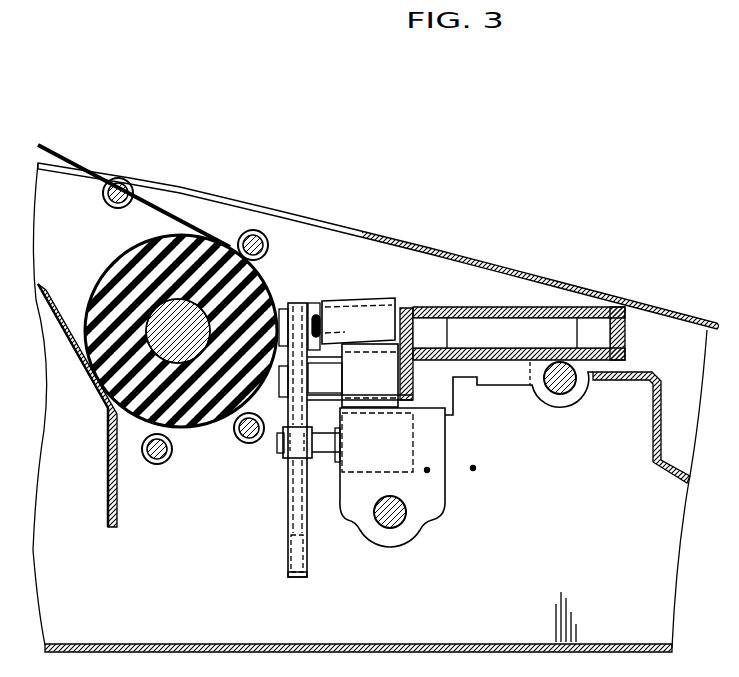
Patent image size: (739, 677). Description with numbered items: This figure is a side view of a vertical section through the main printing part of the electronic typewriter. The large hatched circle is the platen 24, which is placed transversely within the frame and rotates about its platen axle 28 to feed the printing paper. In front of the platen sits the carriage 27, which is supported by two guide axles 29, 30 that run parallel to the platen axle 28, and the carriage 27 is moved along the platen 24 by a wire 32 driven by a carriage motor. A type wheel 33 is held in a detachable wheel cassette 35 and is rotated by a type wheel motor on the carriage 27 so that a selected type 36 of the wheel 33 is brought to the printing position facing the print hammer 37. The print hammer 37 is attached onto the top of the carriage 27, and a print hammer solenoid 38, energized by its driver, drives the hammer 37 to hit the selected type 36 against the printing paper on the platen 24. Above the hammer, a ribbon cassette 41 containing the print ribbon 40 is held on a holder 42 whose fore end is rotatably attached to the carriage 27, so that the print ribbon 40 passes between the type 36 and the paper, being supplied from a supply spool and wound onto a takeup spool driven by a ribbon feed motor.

The platen 24 is at (186, 249).
The platen axle 28 is at (173, 318).
The print ribbon 40 is at (297, 299).
The type wheel 33 is at (290, 517).
The selected type 36 is at (287, 566).
The wheel cassette 35 is at (303, 578).
The print hammer 37 is at (314, 306).
The print hammer solenoid 38 is at (381, 300).
The ribbon cassette 41 is at (513, 306).
The holder 42 is at (518, 362).
The guide axle 30 is at (568, 393).
The carriage 27 is at (427, 531).
The wire 32 is at (427, 470).
The guide axle 29 is at (390, 521).